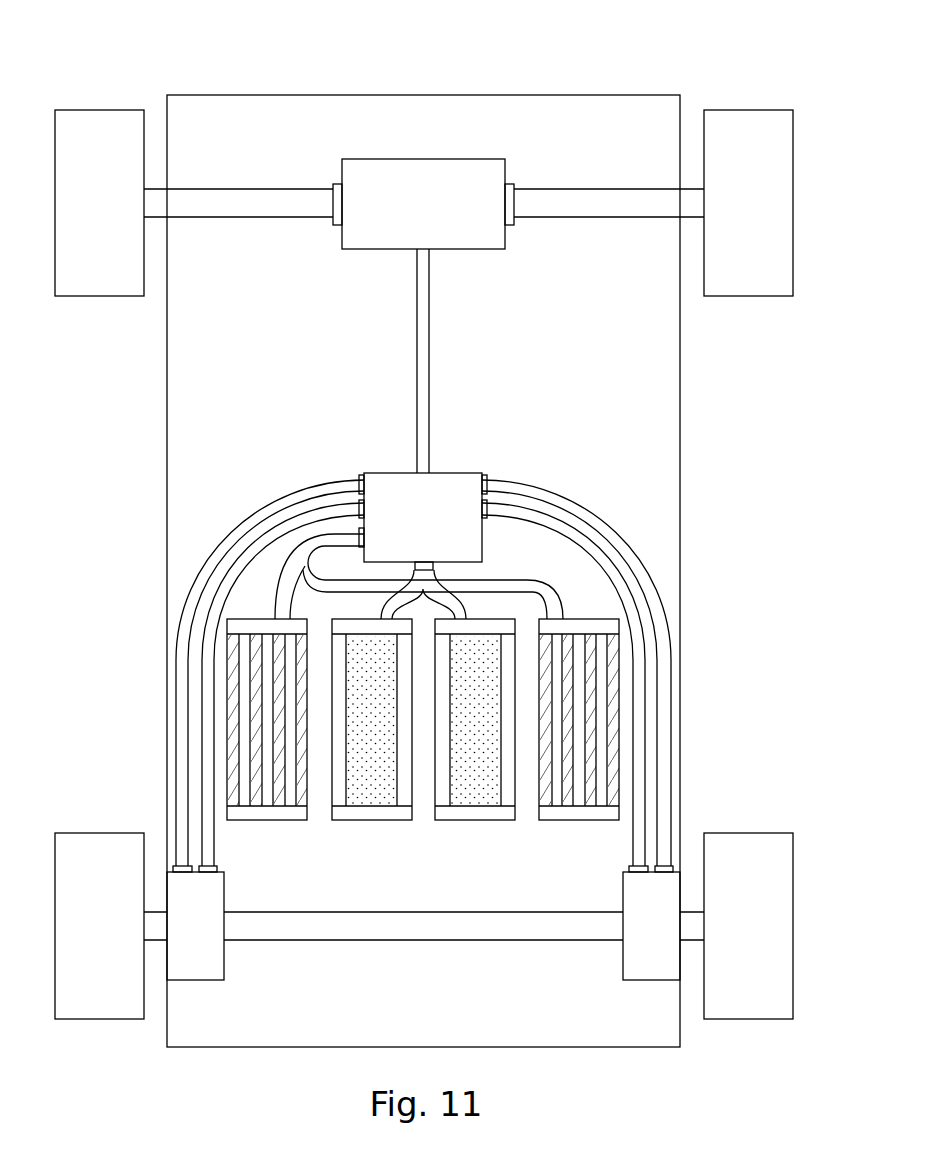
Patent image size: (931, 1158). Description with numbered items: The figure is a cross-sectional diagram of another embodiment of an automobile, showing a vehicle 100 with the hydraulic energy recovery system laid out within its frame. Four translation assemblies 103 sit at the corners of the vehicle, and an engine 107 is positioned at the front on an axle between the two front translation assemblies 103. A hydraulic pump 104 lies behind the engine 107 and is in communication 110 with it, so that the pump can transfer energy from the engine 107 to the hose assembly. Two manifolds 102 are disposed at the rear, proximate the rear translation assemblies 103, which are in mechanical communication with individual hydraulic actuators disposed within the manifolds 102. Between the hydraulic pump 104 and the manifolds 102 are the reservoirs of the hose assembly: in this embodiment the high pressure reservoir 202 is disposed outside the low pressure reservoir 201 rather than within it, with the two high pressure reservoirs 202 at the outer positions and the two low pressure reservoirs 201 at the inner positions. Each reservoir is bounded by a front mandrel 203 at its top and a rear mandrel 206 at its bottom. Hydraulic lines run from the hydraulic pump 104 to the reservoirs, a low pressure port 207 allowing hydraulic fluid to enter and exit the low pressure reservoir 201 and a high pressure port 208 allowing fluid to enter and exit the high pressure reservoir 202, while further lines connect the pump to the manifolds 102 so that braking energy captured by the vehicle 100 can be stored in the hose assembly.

The vehicle 100 is at (148, 40).
The manifold 102 is at (176, 938).
The translation assembly 103 is at (79, 216).
The hydraulic pump 104 is at (404, 529).
The engine 107 is at (404, 213).
The communication 110 is at (423, 361).
The low pressure reservoir 201 is at (382, 825).
The high pressure reservoir 202 is at (266, 840).
The front mandrel 203 is at (347, 627).
The rear mandrel 206 is at (343, 812).
The low pressure port 207 is at (297, 497).
The high pressure port 208 is at (530, 515).